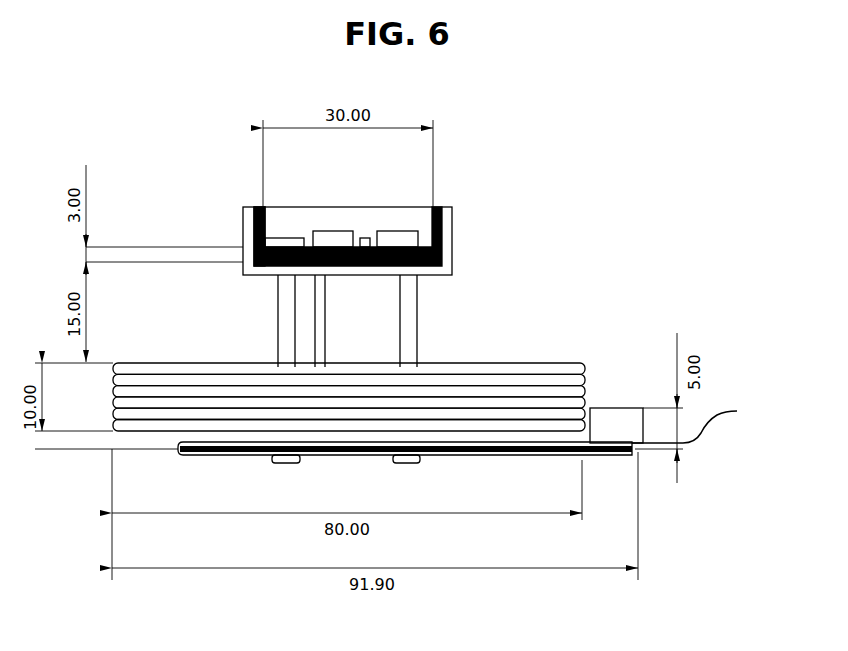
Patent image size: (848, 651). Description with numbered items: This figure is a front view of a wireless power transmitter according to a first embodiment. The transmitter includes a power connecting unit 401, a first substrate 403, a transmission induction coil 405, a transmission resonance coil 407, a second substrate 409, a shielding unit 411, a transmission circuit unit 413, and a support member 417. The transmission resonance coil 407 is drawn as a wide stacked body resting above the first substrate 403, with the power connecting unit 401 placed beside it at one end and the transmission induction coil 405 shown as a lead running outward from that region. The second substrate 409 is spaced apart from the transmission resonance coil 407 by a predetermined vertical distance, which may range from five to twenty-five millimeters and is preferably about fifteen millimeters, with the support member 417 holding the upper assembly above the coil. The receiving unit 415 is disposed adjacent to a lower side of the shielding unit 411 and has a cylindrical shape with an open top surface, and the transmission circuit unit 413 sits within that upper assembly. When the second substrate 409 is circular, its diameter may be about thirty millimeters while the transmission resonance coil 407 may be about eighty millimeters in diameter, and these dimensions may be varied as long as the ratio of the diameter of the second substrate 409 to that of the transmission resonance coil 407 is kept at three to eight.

The power connecting unit 401 is at (618, 413).
The first substrate 403 is at (603, 455).
The transmission induction coil 405 is at (708, 421).
The transmission resonance coil 407 is at (548, 362).
The second substrate 409 is at (336, 244).
The shielding unit 411 is at (265, 220).
The transmission circuit unit 413 is at (393, 238).
The receiving unit 415 is at (455, 238).
The support member 417 is at (421, 314).